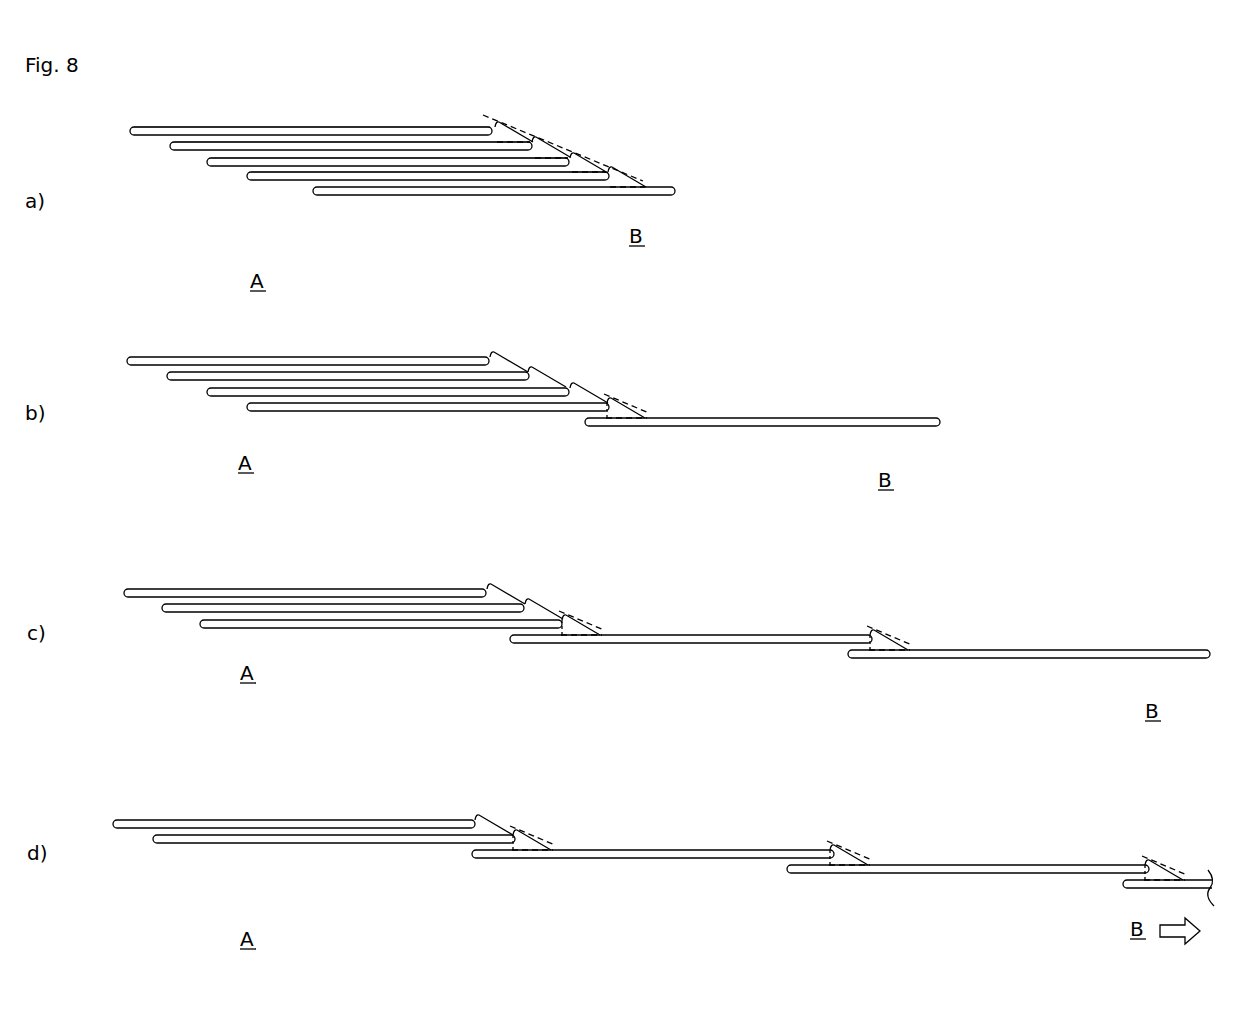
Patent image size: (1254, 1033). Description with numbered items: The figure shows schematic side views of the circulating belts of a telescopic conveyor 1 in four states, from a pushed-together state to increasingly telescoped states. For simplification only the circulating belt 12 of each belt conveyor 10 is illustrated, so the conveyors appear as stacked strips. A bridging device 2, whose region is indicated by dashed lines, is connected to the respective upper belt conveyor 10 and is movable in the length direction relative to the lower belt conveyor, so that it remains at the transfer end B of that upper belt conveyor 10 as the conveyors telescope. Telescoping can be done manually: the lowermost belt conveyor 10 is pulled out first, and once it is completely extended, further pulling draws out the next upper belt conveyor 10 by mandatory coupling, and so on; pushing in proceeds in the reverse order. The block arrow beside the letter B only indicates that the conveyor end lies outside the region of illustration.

The telescopic conveyor 1 is at (407, 107).
The bridging device 2 is at (493, 122).
The belt conveyor 10 is at (139, 137).
The circulating belt 12 is at (191, 127).